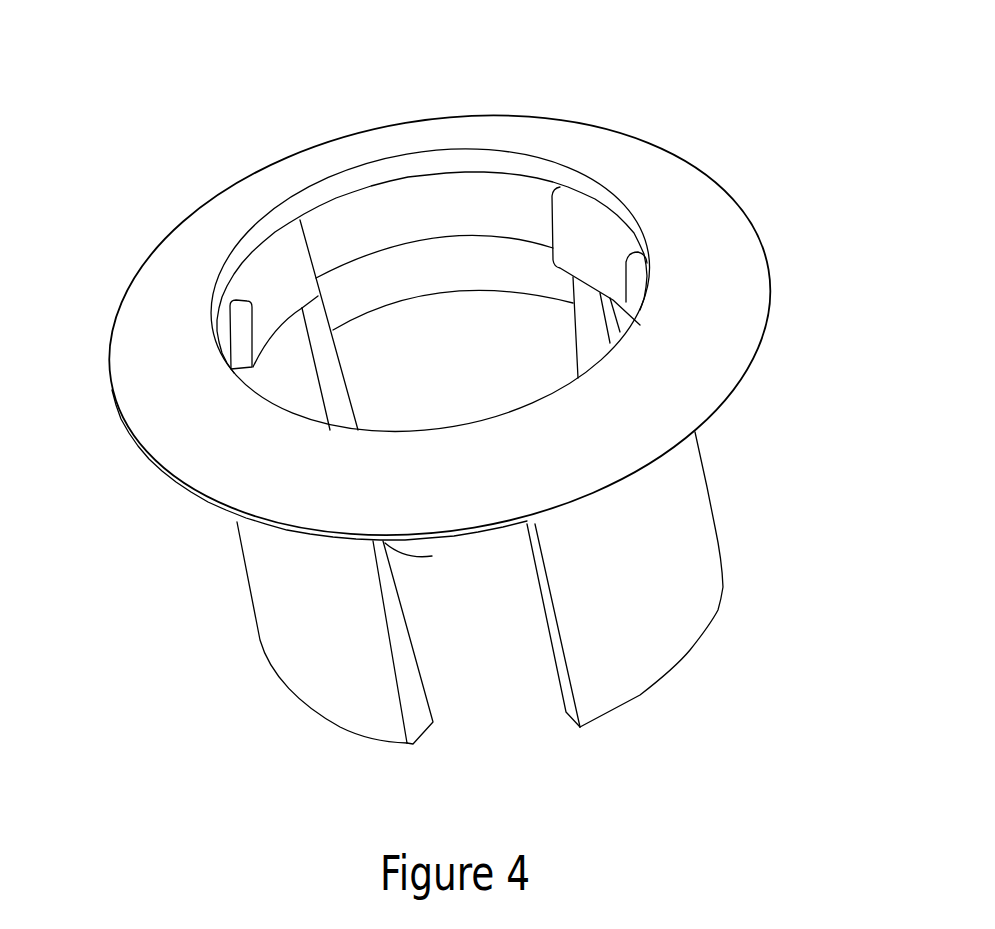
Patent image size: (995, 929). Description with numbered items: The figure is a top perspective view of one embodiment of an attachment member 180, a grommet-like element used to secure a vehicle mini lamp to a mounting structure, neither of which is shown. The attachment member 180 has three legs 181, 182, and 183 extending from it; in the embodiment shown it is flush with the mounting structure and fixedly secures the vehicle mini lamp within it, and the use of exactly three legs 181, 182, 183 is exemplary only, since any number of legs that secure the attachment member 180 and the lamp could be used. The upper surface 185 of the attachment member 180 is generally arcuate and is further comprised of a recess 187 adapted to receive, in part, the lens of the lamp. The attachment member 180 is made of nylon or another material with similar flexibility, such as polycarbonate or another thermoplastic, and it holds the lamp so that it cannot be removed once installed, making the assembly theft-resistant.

The attachment member 180 is at (446, 393).
The leg 181 is at (383, 393).
The leg 182 is at (323, 673).
The leg 183 is at (652, 620).
The upper surface 185 is at (707, 268).
The recess 187 is at (337, 188).